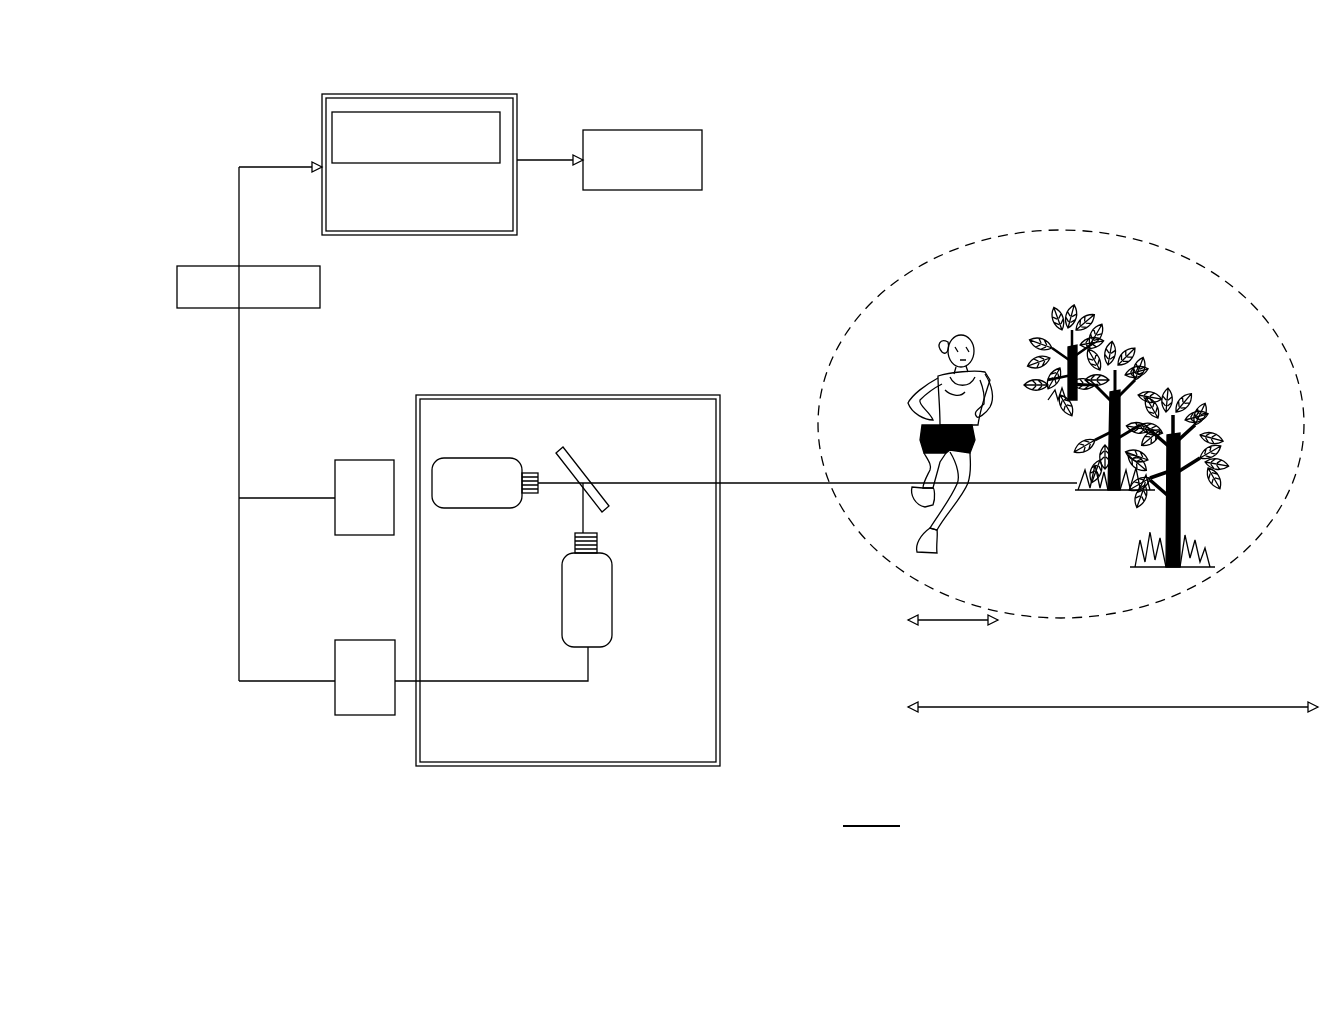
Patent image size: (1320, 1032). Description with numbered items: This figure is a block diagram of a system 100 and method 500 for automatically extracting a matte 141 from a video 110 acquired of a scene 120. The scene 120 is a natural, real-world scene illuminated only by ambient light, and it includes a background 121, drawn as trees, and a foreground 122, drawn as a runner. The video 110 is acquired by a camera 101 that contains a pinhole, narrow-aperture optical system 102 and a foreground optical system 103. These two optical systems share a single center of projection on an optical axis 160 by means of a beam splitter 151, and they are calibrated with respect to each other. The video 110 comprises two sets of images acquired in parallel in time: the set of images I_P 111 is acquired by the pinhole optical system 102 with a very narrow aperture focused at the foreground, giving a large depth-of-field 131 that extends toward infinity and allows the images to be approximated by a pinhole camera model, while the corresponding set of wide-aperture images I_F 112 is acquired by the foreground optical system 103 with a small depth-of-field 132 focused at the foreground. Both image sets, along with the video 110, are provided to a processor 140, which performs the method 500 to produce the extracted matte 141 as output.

The system 100 is at (863, 835).
The camera 101 is at (647, 766).
The pinhole optical system 102 is at (465, 508).
The foreground optical system 103 is at (612, 600).
The video 110 is at (320, 277).
The set of images I_P 111 is at (383, 460).
The set of wide aperture images I_F 112 is at (383, 640).
The scene 120 is at (1122, 240).
The background 121 is at (1230, 432).
The foreground 122 is at (968, 338).
The large depth-of-field 131 is at (1180, 708).
The small depth-of-field 132 is at (940, 622).
The processor 140 is at (403, 235).
The matte 141 is at (690, 190).
The beam splitter 151 is at (577, 463).
The optical axis 160 is at (788, 483).
The method 500 is at (453, 110).